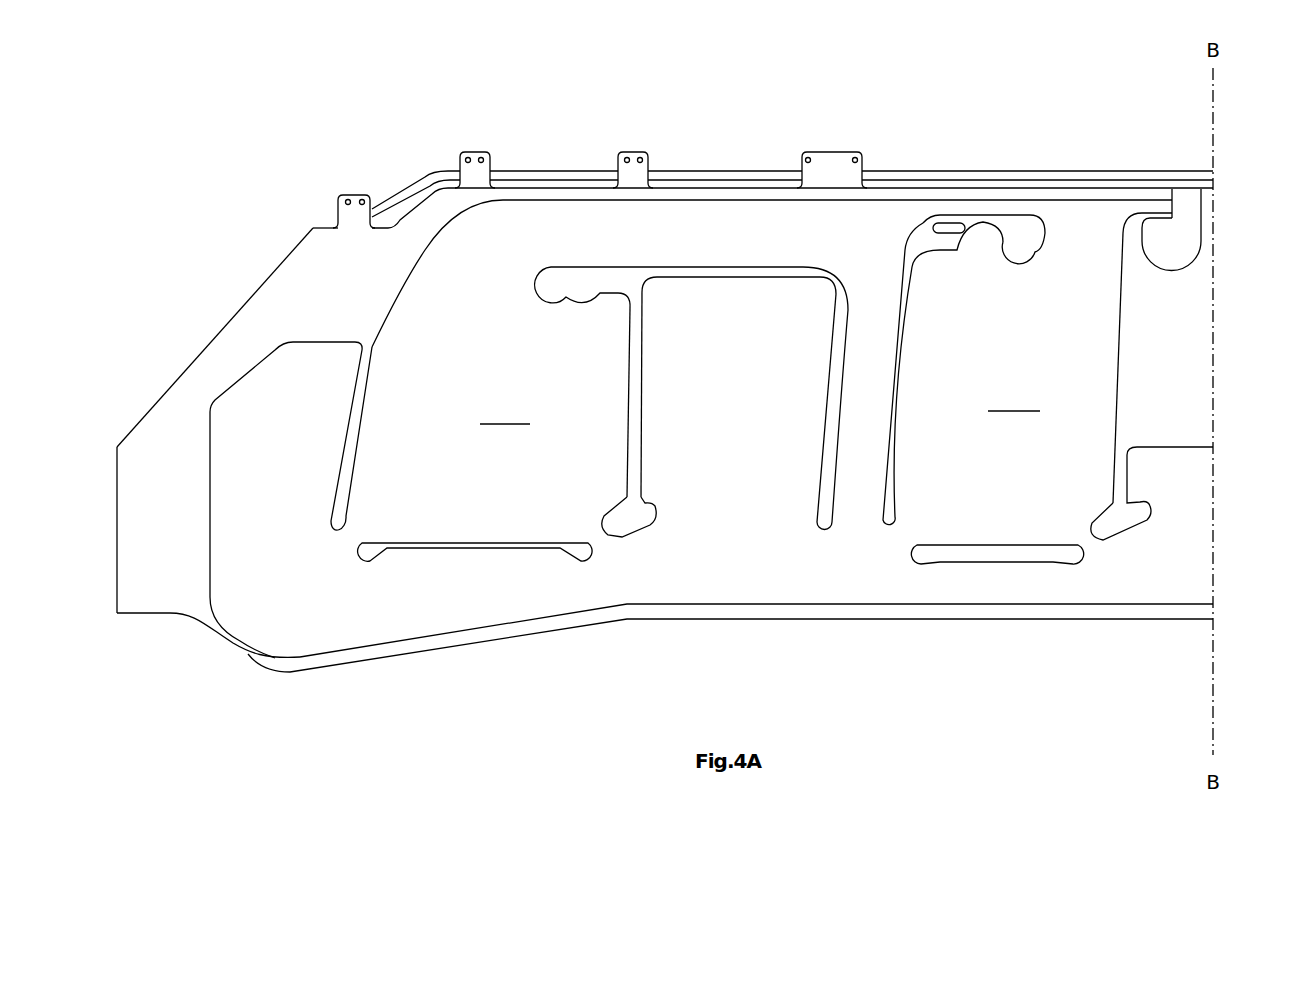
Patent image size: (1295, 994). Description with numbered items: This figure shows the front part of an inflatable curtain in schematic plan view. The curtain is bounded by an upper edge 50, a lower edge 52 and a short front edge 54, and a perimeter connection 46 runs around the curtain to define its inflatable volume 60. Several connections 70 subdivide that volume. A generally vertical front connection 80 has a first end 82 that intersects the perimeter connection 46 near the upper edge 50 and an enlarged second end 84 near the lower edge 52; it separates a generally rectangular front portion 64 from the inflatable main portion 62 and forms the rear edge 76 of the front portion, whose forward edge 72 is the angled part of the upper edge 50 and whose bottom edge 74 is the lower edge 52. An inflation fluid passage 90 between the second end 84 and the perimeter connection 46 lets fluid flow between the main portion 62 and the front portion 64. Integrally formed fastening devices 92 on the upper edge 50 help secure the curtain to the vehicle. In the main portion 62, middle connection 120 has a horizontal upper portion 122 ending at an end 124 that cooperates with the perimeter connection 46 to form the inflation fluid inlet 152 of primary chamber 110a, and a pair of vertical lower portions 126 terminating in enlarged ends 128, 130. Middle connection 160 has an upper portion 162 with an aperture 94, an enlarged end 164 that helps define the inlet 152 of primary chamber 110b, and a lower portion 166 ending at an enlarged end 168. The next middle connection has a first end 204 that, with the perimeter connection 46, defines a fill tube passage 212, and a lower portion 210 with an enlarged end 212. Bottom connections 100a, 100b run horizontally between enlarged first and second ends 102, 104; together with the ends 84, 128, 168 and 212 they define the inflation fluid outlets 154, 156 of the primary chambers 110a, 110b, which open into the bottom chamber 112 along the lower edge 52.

The perimeter connection 46 is at (810, 615).
The upper edge 50 is at (1063, 187).
The lower edge 52 is at (428, 653).
The front edge 54 is at (113, 483).
The inflatable volume 60 is at (732, 552).
The main portion 62 is at (983, 585).
The front portion 64 is at (257, 527).
The connections 70 is at (357, 412).
The forward edge 72 is at (198, 360).
The bottom edge 74 is at (223, 648).
The rear edge 76 is at (337, 437).
The front connection 80 is at (340, 477).
The first end 82 is at (368, 347).
The enlarged second end 84 is at (338, 528).
The inflation fluid passage 90 is at (325, 607).
The fastening device 92 is at (350, 218).
The aperture 94 is at (947, 233).
The bottom connection 100a is at (540, 540).
The bottom connection 100b is at (1022, 565).
The first end 102 is at (365, 557).
The second end 104 is at (582, 557).
The primary chamber 110a is at (505, 413).
The primary chamber 110b is at (1014, 400).
The bottom chamber 112 is at (650, 567).
The middle connection 120 is at (720, 270).
The upper portion 122 is at (677, 272).
The end 124 is at (555, 285).
The lower portions 126 is at (637, 413).
The first end 128 is at (643, 508).
The second end 130 is at (818, 525).
The inflation fluid inlet 152 is at (455, 255).
The inflation fluid outlet 154 is at (348, 543).
The inflation fluid outlet 156 is at (598, 540).
The middle connection 160 is at (983, 220).
The upper portion 162 is at (922, 227).
The enlarged end 164 is at (1023, 242).
The lower portion 166 is at (893, 347).
The enlarged end 168 is at (895, 527).
The first end 204 is at (1162, 217).
The lower portion 210 is at (1168, 362).
The first end 212 is at (1162, 205).